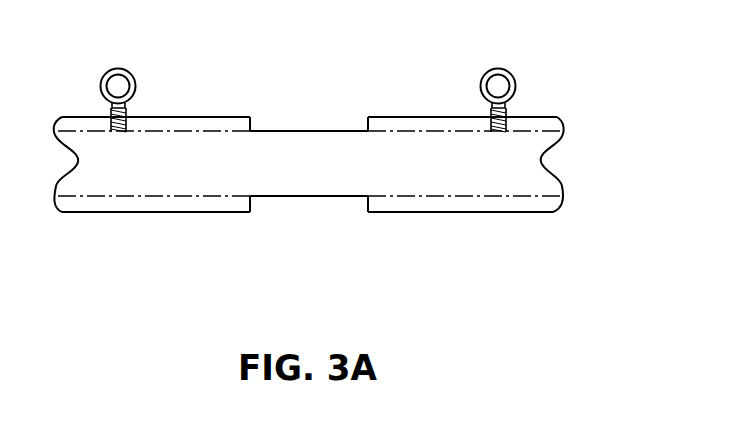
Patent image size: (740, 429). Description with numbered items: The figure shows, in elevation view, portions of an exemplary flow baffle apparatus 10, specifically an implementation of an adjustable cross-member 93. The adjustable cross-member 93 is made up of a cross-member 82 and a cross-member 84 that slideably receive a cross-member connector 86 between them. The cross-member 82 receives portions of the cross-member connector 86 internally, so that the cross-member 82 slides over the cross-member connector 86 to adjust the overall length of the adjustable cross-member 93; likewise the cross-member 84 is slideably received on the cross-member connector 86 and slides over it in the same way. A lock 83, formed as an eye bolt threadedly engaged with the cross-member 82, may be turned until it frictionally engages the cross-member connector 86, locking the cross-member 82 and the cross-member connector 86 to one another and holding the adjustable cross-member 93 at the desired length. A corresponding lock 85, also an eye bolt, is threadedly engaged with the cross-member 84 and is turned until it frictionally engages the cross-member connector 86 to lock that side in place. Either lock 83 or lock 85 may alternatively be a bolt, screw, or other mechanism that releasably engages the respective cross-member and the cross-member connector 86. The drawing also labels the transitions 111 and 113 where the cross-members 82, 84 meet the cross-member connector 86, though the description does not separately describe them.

The tube assembly 10 is at (603, 68).
The cross-member 82 is at (186, 116).
The lock 83 is at (122, 71).
The cross-member 84 is at (537, 116).
The lock 85 is at (504, 71).
The cross-member connector 86 is at (299, 130).
The adjustable cross-member 93 is at (445, 196).
The first shoulder 111 is at (252, 116).
The second shoulder 113 is at (364, 116).